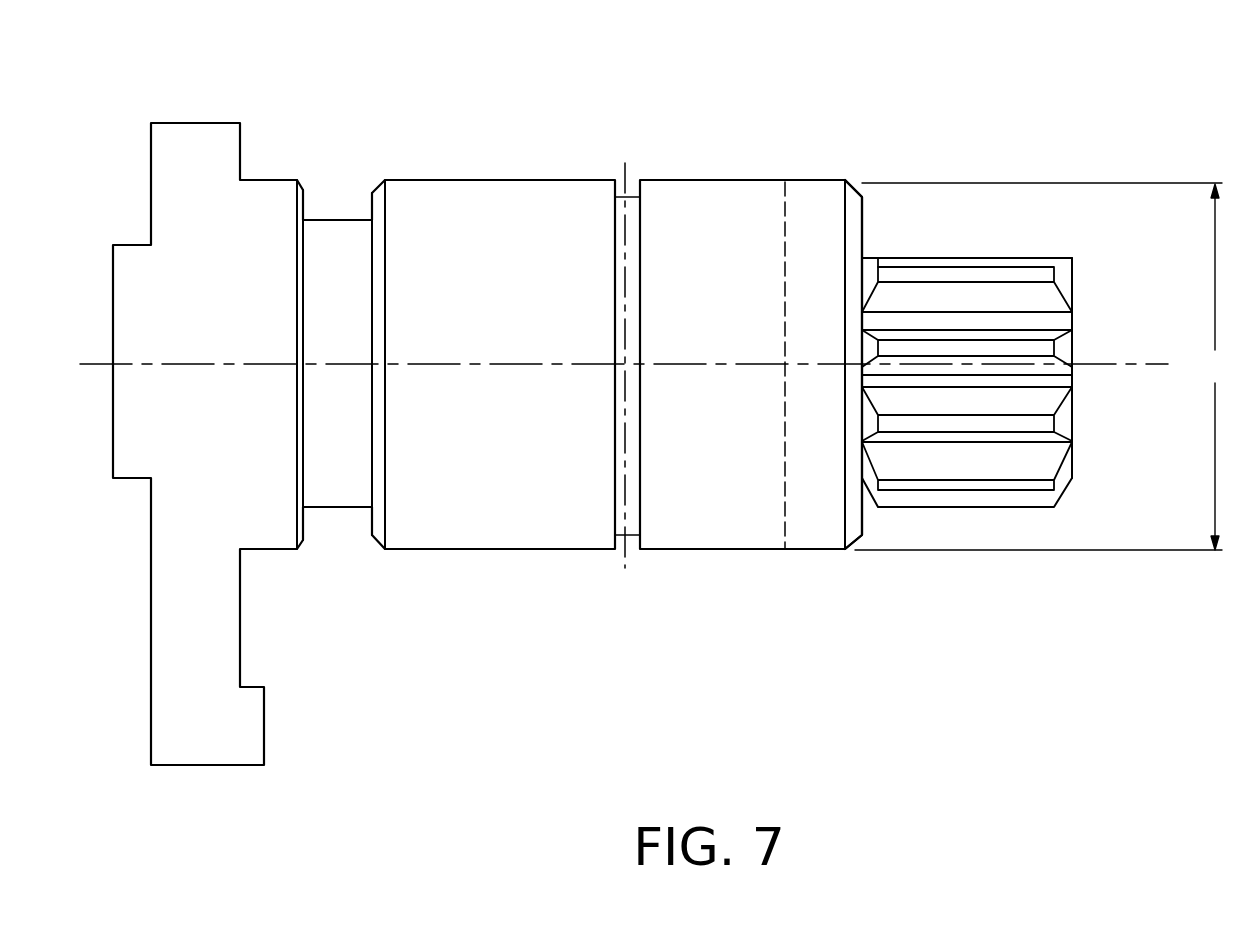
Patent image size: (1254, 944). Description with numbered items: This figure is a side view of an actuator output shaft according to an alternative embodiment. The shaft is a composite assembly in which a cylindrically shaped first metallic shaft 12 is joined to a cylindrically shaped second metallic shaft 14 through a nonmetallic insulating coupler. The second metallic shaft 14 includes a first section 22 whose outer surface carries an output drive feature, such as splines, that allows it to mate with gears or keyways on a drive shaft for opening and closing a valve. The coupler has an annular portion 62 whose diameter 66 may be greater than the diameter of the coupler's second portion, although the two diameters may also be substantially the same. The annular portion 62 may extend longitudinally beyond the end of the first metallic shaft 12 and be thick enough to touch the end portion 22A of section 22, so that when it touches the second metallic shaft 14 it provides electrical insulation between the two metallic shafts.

The first metallic shaft 12 is at (485, 550).
The second metallic shaft 14 is at (1017, 223).
The first section of second metallic shaft 22 is at (973, 507).
The end portion of first section 22A is at (863, 257).
The annular portion 62 is at (845, 170).
The diameter of annular portion 66 is at (1043, 366).